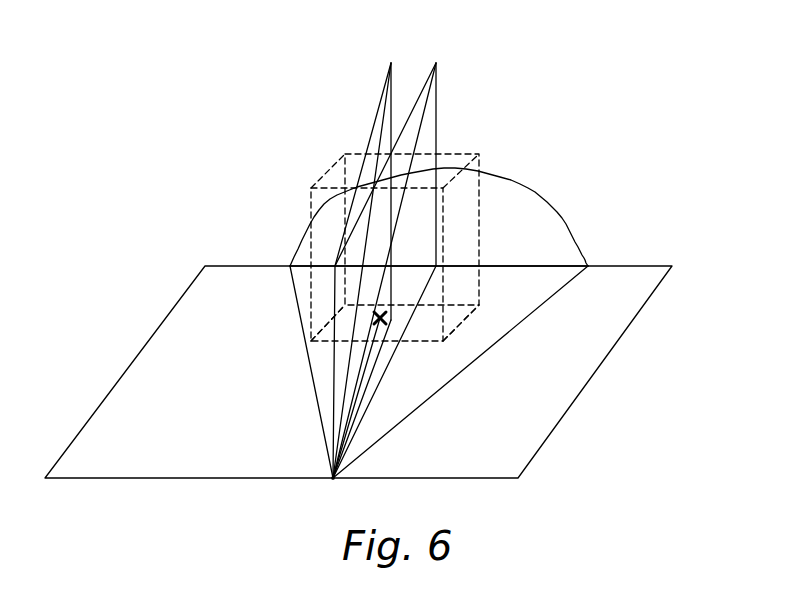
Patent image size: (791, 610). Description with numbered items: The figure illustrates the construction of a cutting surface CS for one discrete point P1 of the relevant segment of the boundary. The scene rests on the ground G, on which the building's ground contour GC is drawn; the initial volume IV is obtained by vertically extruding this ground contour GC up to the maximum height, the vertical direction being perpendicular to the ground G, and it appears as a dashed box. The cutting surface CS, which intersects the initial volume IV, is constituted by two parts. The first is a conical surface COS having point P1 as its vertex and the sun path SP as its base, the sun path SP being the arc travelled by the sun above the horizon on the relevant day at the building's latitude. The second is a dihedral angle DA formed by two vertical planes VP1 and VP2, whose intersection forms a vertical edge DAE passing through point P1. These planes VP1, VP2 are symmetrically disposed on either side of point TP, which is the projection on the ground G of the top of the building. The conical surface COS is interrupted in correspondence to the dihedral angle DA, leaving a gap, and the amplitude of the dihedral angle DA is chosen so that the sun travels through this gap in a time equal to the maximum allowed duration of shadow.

The ground G is at (148, 385).
The sun path SP is at (557, 212).
The cutting surface CS is at (508, 204).
The conical surface COS is at (557, 247).
The first vertical plane VP1 is at (380, 98).
The second vertical plane VP2 is at (443, 90).
The dihedral angle DA is at (415, 60).
The projection of the top of the building TP is at (388, 326).
The initial volume IV is at (328, 170).
The vertical edge DAE is at (328, 310).
The ground contour GC is at (468, 320).
The point P1 is at (332, 480).